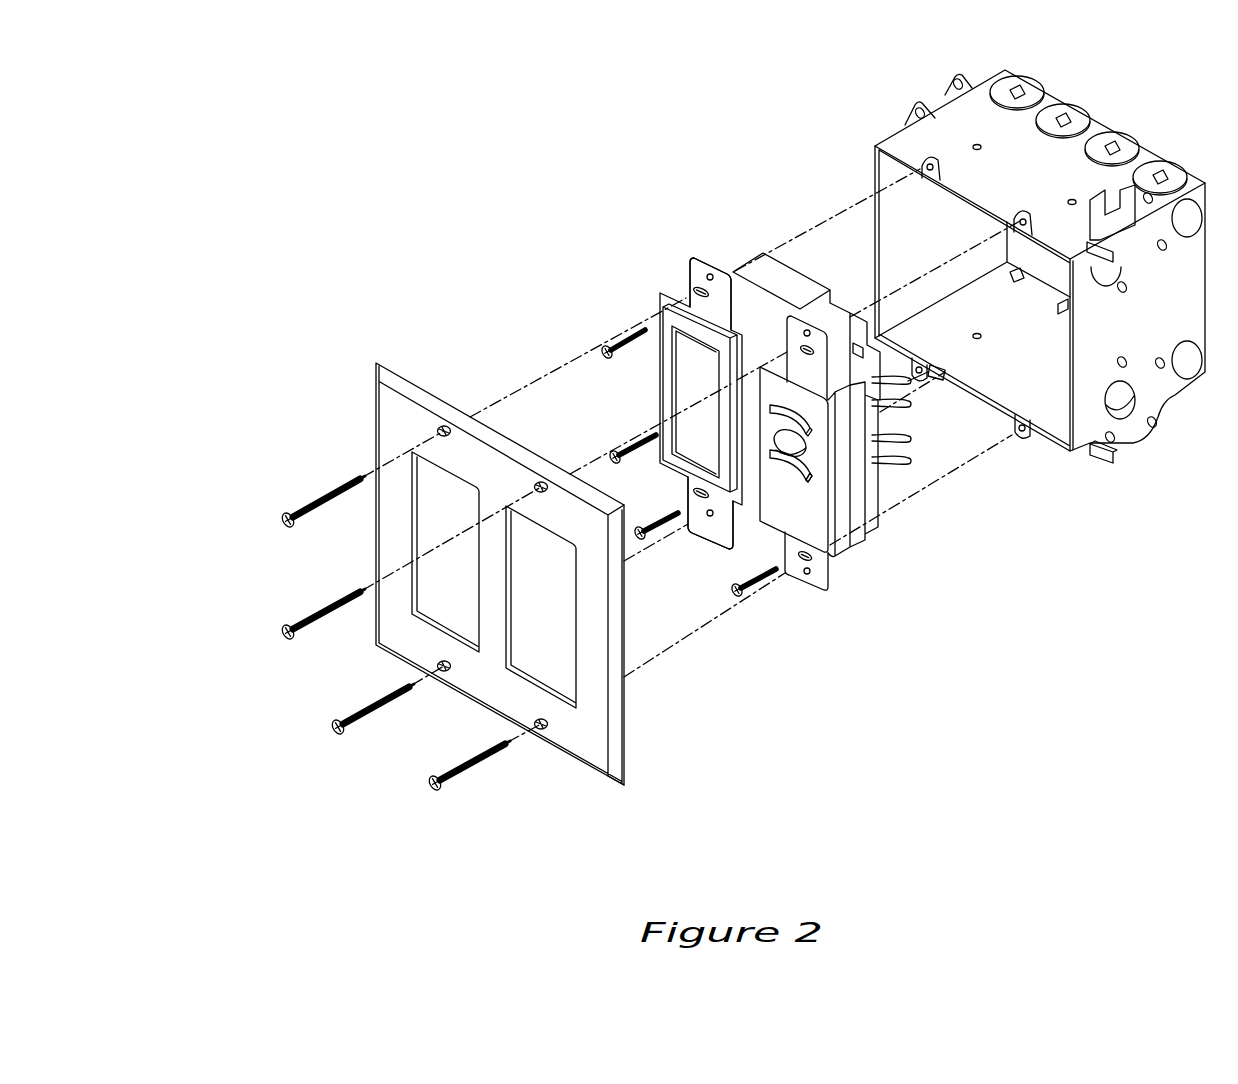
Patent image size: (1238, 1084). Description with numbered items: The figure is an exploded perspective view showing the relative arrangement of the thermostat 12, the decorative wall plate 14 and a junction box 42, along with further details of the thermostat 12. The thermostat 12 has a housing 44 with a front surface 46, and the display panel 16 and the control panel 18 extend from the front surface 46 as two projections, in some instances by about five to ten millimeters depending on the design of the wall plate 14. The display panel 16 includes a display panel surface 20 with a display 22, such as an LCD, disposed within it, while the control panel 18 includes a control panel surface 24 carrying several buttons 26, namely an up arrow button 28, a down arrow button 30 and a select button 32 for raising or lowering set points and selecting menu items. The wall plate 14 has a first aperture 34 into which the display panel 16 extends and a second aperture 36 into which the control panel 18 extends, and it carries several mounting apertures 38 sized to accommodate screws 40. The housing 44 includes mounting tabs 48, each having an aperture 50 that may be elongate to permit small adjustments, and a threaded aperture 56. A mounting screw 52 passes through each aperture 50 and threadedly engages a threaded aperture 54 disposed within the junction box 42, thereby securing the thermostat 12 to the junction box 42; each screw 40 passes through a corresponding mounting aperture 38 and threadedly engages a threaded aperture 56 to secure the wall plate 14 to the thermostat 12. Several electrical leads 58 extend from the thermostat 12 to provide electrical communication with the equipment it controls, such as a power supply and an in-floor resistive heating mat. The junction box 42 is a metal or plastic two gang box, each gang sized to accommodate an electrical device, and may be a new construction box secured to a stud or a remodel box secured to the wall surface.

The thermostat 12 is at (782, 275).
The wall plate 14 is at (590, 733).
The display panel 16 is at (640, 387).
The control panel 18 is at (867, 435).
The display panel surface 20 is at (660, 368).
The display 22 is at (680, 390).
The control panel surface 24 is at (813, 535).
The buttons 26 is at (832, 459).
The up arrow button 28 is at (808, 432).
The down arrow button 30 is at (800, 480).
The select button 32 is at (808, 470).
The first aperture 34 is at (427, 528).
The second aperture 36 is at (561, 623).
The mounting apertures 38 is at (444, 431).
The screws 40 is at (283, 520).
The junction box 42 is at (952, 123).
The housing 44 is at (857, 420).
The front surface 46 is at (750, 478).
The mounting tabs 48 is at (693, 258).
The aperture 50 is at (697, 284).
The mounting screw 52 is at (625, 330).
The threaded aperture 54 is at (922, 167).
The threaded aperture 56 is at (710, 277).
The electrical leads 58 is at (907, 440).